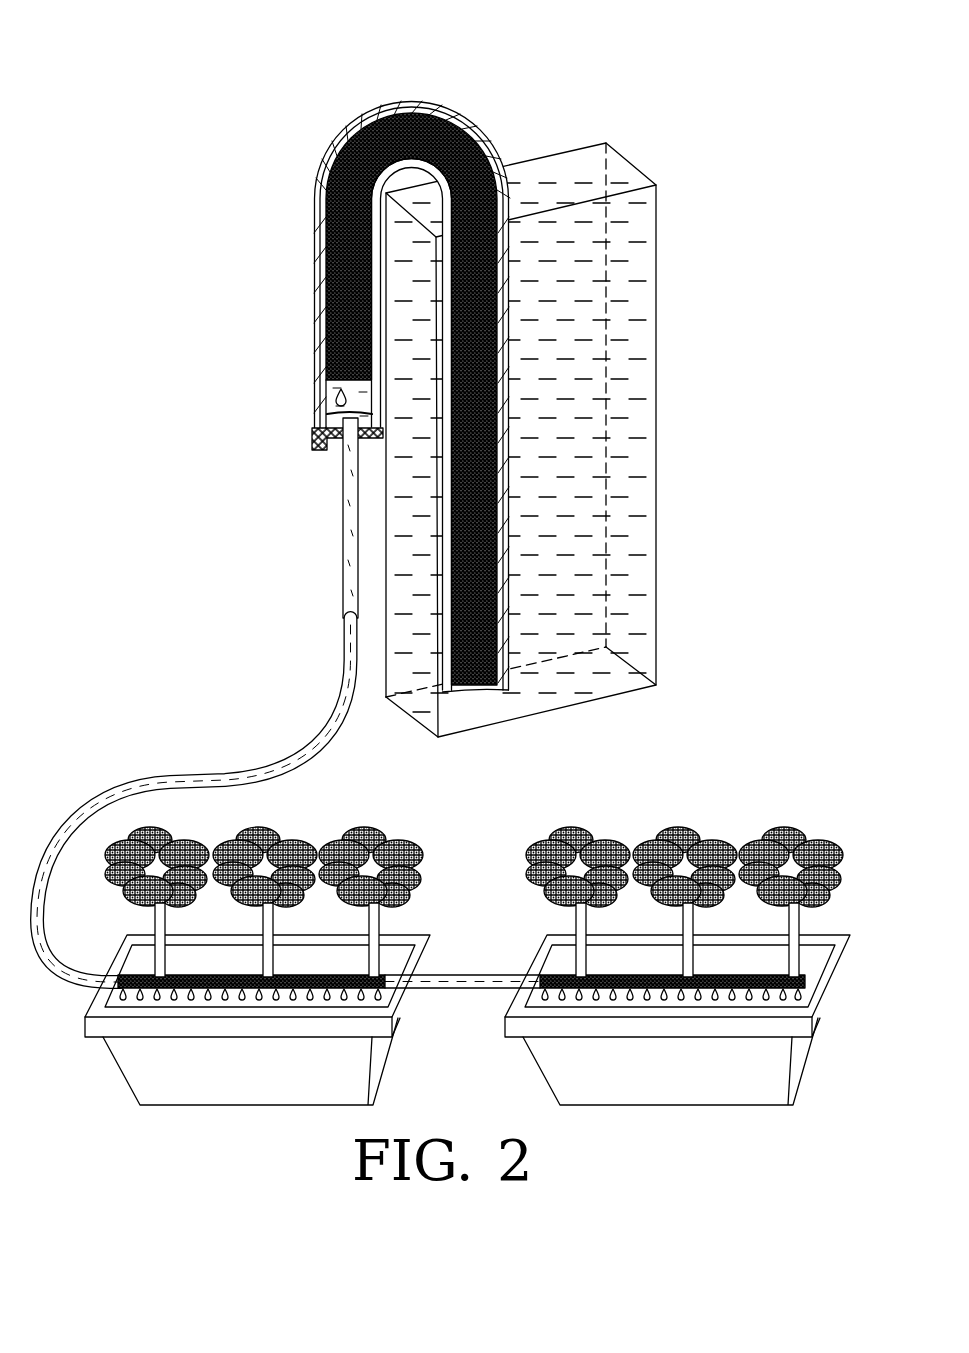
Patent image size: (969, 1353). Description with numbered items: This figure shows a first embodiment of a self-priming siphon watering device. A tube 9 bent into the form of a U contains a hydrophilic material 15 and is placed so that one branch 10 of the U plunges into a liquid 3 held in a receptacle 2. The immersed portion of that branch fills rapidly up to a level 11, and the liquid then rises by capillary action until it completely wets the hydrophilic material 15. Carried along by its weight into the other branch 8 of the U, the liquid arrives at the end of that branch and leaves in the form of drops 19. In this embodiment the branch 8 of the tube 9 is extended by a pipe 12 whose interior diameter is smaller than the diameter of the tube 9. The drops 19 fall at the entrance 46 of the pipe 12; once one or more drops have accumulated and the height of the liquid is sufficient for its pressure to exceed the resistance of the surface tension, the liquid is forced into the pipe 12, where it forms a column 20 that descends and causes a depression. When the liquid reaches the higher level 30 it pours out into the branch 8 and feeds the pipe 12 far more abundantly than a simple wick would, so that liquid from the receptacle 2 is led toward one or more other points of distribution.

The receptacle 2 is at (592, 412).
The liquid 3 is at (598, 462).
The branch 8 is at (318, 305).
The tube 9 is at (320, 197).
The branch 10 is at (505, 330).
The level 11 is at (585, 177).
The pipe 12 is at (307, 728).
The hydrophilic material 15 is at (465, 128).
The drops 19 is at (332, 395).
The column 20 is at (340, 472).
The higher level 30 is at (434, 348).
The entrance 46 is at (326, 423).